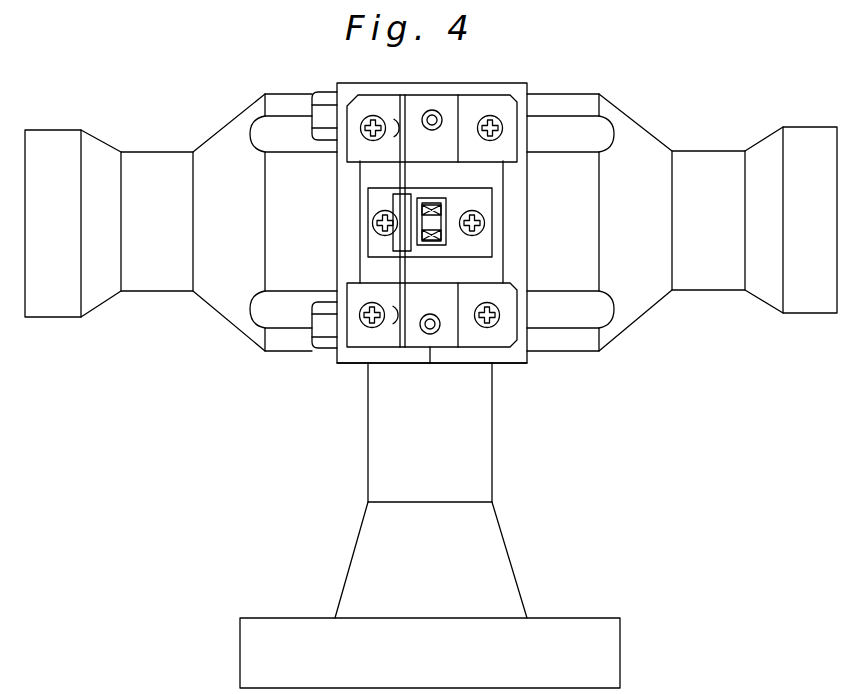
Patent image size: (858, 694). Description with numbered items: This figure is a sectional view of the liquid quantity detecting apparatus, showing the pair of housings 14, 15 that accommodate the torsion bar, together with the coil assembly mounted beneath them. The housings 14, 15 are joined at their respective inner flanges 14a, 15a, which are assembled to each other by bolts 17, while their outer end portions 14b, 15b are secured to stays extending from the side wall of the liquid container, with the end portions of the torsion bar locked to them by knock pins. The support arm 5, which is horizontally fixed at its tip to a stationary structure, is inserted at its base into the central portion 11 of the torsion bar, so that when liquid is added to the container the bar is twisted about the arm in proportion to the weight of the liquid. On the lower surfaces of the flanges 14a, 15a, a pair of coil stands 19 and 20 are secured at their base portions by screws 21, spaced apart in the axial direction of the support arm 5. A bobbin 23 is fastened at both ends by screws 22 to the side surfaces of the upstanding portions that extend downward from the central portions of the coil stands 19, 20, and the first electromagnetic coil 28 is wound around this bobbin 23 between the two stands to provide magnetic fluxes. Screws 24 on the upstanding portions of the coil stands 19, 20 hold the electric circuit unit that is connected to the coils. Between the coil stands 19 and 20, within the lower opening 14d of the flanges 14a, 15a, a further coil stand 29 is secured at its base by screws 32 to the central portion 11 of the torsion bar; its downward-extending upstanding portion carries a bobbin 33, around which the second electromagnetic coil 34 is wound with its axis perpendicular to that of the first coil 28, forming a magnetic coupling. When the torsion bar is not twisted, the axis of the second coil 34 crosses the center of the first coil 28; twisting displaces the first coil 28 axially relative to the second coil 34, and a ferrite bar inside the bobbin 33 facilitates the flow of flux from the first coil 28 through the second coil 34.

The support arm 5 is at (487, 560).
The central portion 11 is at (368, 172).
The housing 14 is at (650, 165).
The inner flange 14a is at (483, 357).
The outer end portion 14b is at (807, 312).
The lower opening 14d is at (497, 205).
The housing 15 is at (212, 164).
The inner flange 15a is at (397, 357).
The outer end portion 15b is at (49, 309).
The bolt 17 is at (322, 112).
The coil stand 19 is at (477, 112).
The coil stand 20 is at (507, 341).
The screw 21 is at (498, 116).
The screw 22 is at (398, 122).
The bobbin 23 is at (393, 325).
The screw 24 is at (432, 110).
The first electromagnetic coil 28 is at (393, 242).
The coil stand 29 is at (496, 193).
The screw 32 is at (383, 222).
The bobbin 33 is at (438, 222).
The second electromagnetic coil 34 is at (432, 197).